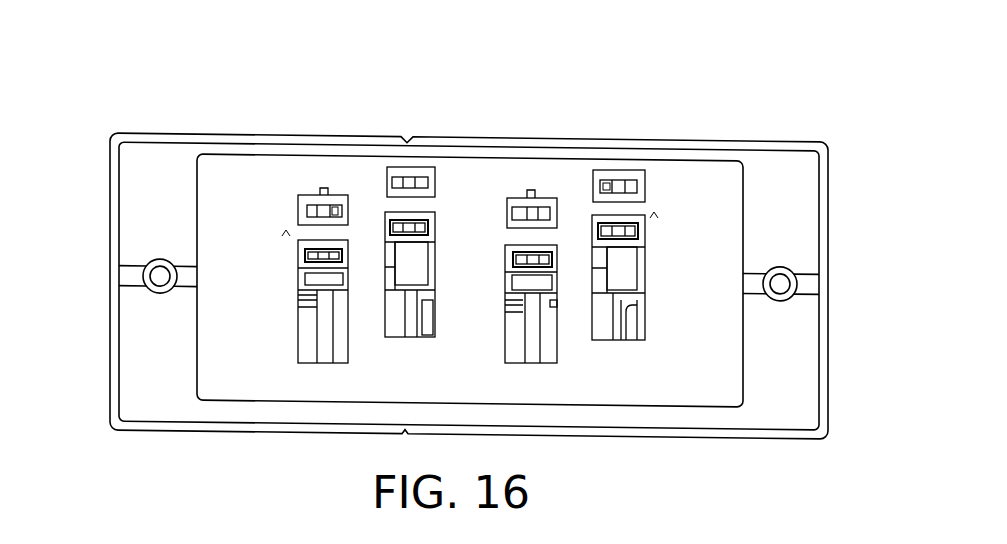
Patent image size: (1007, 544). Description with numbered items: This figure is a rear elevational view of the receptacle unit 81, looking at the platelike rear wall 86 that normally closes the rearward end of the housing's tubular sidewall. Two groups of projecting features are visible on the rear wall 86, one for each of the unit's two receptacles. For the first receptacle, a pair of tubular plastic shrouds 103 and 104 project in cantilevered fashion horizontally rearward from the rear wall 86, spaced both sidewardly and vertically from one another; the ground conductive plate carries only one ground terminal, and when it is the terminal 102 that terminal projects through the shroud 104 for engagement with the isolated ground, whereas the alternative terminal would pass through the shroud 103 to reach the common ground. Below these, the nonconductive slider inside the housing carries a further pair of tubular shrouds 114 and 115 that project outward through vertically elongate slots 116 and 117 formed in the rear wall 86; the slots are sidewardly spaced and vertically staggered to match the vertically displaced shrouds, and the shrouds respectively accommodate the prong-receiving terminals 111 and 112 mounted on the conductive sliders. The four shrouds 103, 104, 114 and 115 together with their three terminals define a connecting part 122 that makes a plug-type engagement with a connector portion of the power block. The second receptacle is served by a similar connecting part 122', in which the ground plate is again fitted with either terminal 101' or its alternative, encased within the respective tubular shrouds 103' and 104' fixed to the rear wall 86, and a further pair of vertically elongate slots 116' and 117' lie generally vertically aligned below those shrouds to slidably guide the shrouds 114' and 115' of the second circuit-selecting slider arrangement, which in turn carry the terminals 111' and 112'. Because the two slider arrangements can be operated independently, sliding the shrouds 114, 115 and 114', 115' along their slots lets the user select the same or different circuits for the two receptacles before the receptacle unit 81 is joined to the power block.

The receptacle unit 81 is at (197, 108).
The rear wall 86 is at (726, 366).
The connecting part 122 is at (164, 209).
The connecting part 122' is at (726, 133).
The terminal 102 is at (333, 202).
The tubular plastic shroud 103 is at (417, 130).
The tubular plastic shroud 104 is at (302, 145).
The tubular shroud 104' is at (542, 147).
The prong-receiving terminal 101' is at (620, 130).
The tubular shroud 103' is at (648, 136).
The terminal 111 is at (433, 254).
The terminal 111' is at (650, 277).
The tubular plastic shroud 114 is at (441, 220).
The tubular shroud 114' is at (655, 230).
The tubular plastic shroud 115 is at (285, 301).
The tubular shroud 115' is at (502, 302).
The terminal 112 is at (288, 280).
The terminal 112' is at (499, 277).
The vertically elongate slot 116 is at (405, 337).
The vertically elongate slot 116' is at (611, 344).
The vertically elongate slot 117 is at (287, 343).
The vertically elongate slot 117' is at (502, 344).